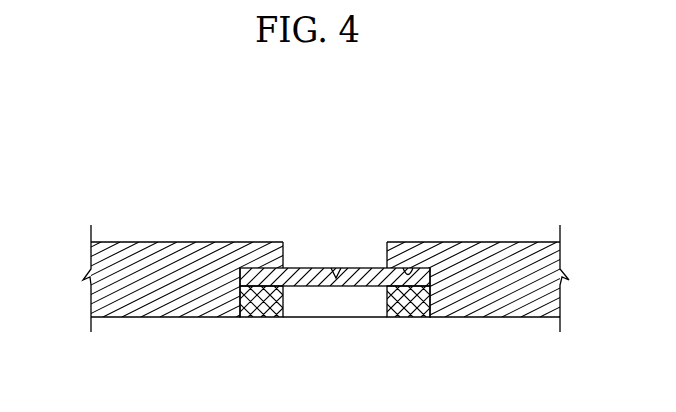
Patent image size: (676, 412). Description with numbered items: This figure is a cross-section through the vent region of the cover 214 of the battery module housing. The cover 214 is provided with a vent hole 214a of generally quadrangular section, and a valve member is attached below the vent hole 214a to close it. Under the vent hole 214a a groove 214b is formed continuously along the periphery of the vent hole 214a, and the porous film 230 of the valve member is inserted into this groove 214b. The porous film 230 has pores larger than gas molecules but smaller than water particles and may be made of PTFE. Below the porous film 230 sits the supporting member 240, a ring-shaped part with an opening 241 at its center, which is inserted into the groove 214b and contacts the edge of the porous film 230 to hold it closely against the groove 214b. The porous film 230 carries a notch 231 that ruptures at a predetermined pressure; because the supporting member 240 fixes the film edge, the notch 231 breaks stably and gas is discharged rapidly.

The cover 214 is at (482, 260).
The vent hole 214a is at (356, 238).
The groove 214b is at (412, 268).
The porous film 230 is at (267, 277).
The notch 231 is at (336, 277).
The supporting member 240 is at (267, 298).
The opening 241 is at (330, 305).